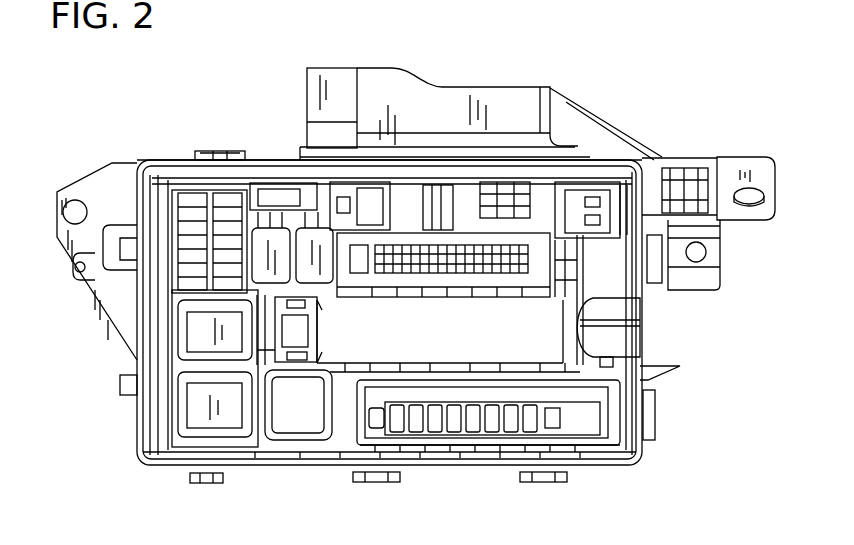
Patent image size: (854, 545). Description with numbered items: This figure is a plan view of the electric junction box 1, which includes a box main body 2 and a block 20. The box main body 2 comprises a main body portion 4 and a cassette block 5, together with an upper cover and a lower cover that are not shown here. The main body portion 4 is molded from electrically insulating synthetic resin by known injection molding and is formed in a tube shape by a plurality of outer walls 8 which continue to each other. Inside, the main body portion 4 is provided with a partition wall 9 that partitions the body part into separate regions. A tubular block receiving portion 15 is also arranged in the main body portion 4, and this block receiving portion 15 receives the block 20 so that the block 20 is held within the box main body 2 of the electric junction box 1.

The electric junction box 1 is at (191, 114).
The box main body 2 is at (164, 154).
The main body portion 4 is at (323, 478).
The cassette block 5 is at (246, 188).
The outer walls 8 is at (224, 160).
The partition wall 9 is at (428, 364).
The block receiving portion 15 is at (303, 362).
The block 20 is at (325, 332).